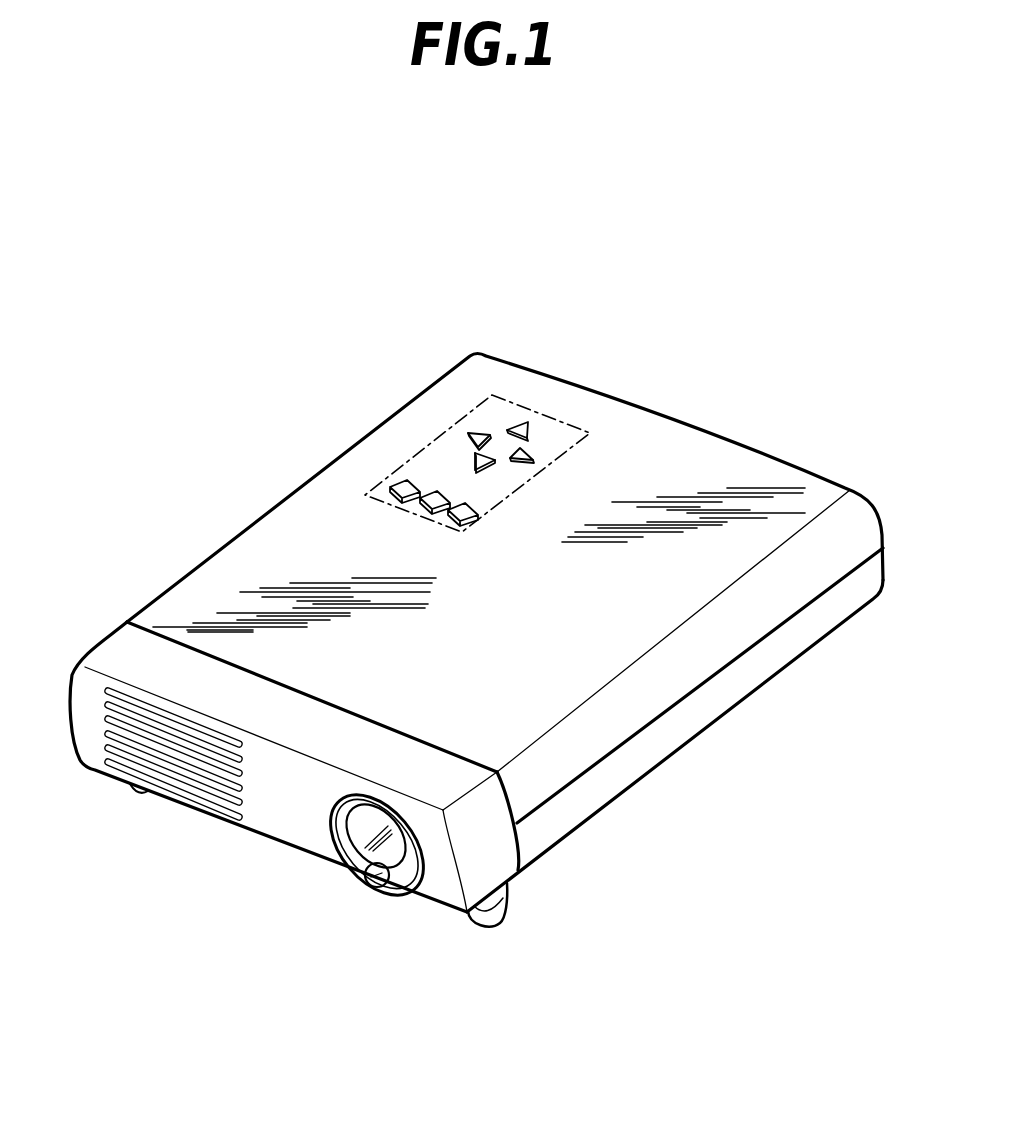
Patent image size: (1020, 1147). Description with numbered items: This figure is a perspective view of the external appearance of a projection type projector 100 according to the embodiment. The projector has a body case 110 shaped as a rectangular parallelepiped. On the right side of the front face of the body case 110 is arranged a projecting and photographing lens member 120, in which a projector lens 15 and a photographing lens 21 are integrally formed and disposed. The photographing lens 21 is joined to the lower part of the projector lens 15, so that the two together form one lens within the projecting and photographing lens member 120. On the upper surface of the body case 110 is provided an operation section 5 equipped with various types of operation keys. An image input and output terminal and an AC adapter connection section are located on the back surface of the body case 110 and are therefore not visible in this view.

The projection type projector 100 is at (603, 323).
The body case 110 is at (740, 442).
The projecting and photographing lens member 120 is at (423, 883).
The operation section 5 is at (432, 442).
The projector lens 15 is at (352, 837).
The photographing lens 21 is at (375, 885).